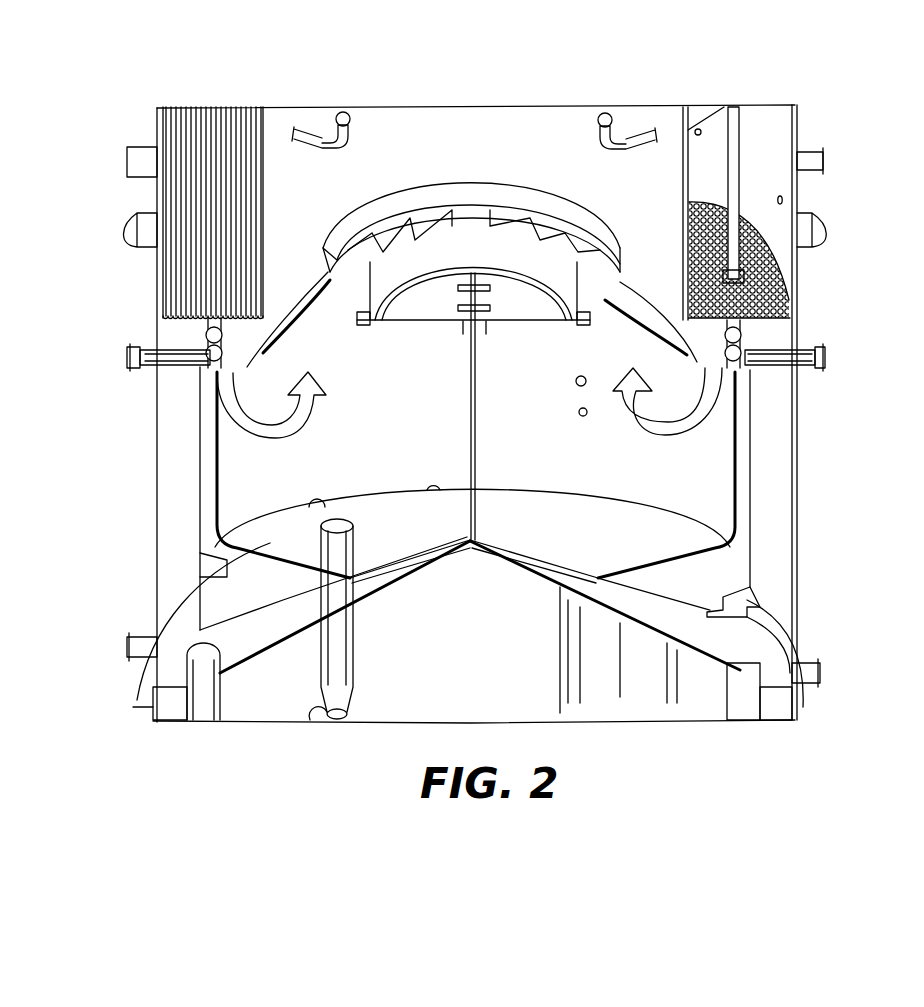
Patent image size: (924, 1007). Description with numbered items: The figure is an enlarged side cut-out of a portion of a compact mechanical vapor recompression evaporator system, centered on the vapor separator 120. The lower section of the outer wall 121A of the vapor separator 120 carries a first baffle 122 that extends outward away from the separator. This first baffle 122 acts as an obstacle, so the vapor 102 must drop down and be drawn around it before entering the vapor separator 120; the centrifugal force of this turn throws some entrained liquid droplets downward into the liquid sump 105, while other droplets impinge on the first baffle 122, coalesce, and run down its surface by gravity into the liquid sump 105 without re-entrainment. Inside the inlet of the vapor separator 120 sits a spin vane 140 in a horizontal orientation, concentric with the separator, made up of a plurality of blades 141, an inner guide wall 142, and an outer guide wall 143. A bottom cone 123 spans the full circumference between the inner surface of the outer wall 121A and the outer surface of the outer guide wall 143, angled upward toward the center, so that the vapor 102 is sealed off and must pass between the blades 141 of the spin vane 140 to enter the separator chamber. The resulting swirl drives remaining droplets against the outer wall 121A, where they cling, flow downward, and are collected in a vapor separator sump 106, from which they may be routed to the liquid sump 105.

The vapor 102 is at (233, 373).
The liquid sump 105 is at (193, 608).
The vapor separator sump 106 is at (277, 317).
The vapor separator 120 is at (283, 143).
The outer wall 121A is at (262, 262).
The first baffle 122 is at (210, 337).
The bottom cone 123 is at (780, 342).
The spin vane 140 is at (420, 152).
The blades 141 is at (512, 190).
The inner guide wall 142 is at (527, 214).
The outer guide wall 143 is at (619, 274).